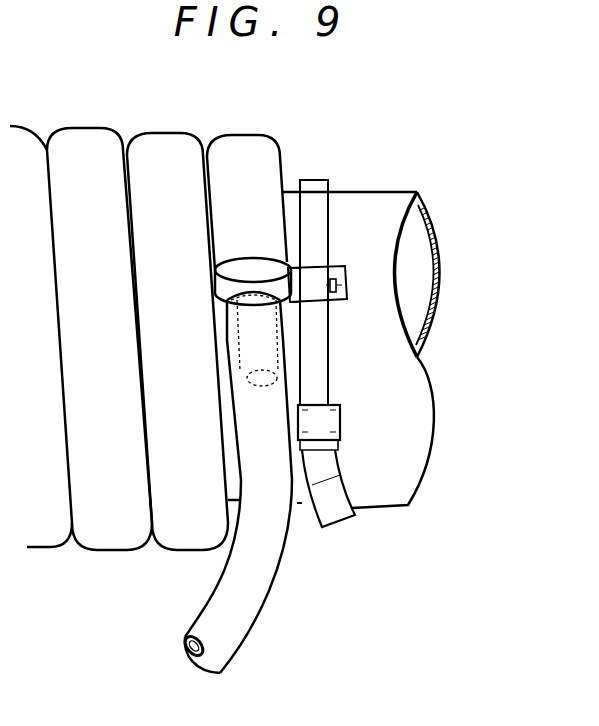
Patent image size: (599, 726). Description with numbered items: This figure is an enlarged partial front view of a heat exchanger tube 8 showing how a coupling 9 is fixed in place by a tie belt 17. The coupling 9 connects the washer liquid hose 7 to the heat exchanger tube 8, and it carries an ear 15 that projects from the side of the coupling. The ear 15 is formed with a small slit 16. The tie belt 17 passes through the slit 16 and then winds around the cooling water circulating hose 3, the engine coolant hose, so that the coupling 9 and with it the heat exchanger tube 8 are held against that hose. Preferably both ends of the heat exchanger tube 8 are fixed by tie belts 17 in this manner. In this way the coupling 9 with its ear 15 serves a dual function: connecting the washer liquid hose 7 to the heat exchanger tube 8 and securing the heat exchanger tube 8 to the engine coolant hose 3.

The cooling water circulating hose 3 is at (410, 460).
The washer liquid hose 7 is at (245, 617).
The heat exchanger tube 8 is at (168, 155).
The coupling 9 is at (287, 262).
The ear 15 is at (355, 283).
The slit 16 is at (347, 302).
The tie belt 17 is at (314, 178).